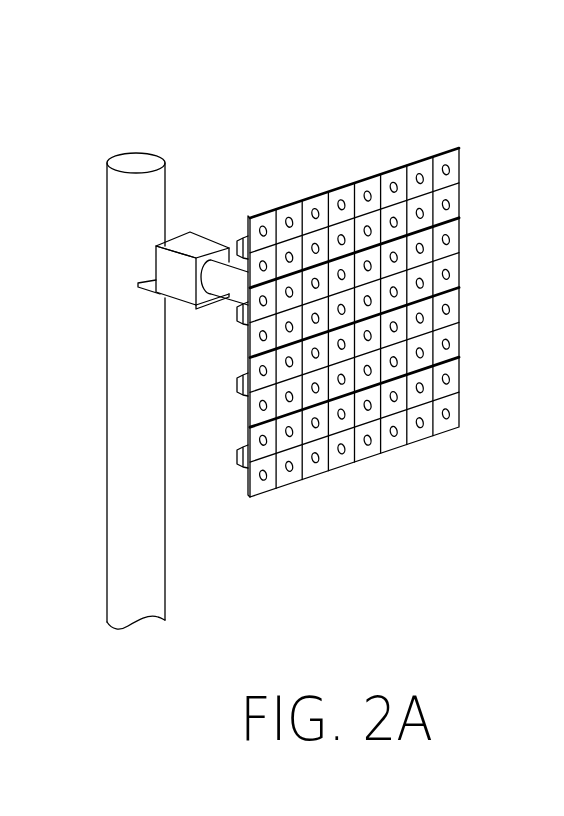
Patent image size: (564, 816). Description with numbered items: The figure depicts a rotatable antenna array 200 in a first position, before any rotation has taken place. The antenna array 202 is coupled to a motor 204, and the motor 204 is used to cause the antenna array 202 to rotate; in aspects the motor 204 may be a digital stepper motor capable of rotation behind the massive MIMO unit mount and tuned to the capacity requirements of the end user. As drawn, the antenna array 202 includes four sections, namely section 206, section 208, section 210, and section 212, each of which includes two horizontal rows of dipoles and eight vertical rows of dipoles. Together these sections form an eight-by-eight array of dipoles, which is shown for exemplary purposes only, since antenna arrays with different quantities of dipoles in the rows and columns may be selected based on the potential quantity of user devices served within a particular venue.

The rotatable antenna array 200 is at (176, 72).
The antenna array 202 is at (372, 178).
The motor 204 is at (201, 245).
The section 206 is at (444, 191).
The section 208 is at (444, 261).
The section 210 is at (444, 329).
The section 212 is at (444, 398).